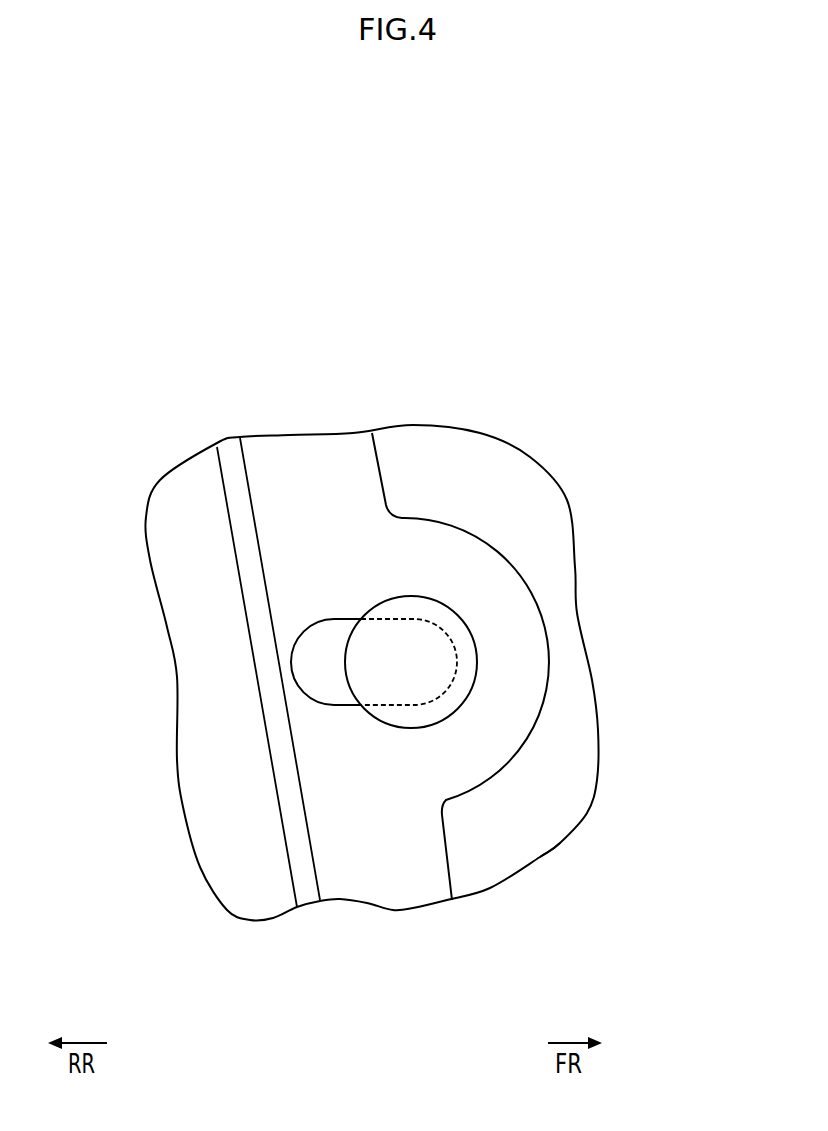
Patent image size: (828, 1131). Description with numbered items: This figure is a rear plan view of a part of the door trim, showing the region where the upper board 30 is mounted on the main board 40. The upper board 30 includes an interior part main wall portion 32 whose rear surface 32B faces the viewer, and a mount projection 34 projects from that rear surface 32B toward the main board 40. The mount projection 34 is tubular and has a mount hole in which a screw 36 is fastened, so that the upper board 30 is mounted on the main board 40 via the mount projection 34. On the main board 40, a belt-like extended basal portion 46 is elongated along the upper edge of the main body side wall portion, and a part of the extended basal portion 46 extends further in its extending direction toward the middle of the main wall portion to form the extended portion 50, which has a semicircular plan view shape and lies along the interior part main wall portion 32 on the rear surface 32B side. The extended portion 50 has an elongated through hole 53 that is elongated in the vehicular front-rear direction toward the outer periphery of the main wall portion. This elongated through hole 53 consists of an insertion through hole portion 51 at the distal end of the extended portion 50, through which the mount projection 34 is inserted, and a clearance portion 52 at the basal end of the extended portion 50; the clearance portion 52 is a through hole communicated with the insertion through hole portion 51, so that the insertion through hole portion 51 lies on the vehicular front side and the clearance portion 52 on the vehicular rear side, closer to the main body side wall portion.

The upper board 30 is at (531, 666).
The interior part main wall portion 32 is at (568, 798).
The rear surface 32B is at (631, 827).
The mount projection 34 is at (397, 667).
The screw 36 is at (472, 774).
The main board 40 is at (181, 803).
The extended basal portion 46 is at (362, 862).
The extended portion 50 is at (517, 613).
The insertion through hole portion 51 is at (414, 619).
The clearance portion 52 is at (292, 663).
The elongated through hole 53 is at (374, 508).